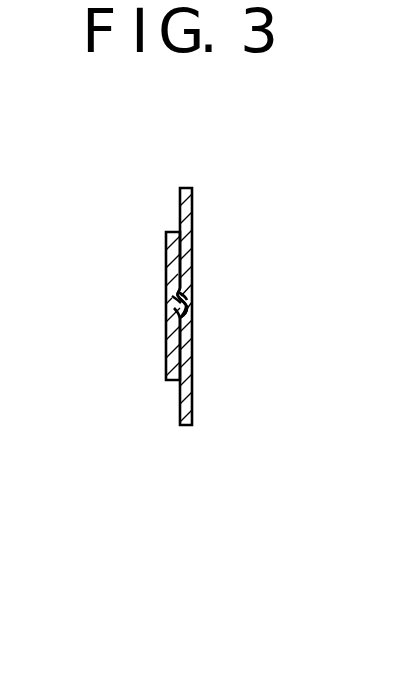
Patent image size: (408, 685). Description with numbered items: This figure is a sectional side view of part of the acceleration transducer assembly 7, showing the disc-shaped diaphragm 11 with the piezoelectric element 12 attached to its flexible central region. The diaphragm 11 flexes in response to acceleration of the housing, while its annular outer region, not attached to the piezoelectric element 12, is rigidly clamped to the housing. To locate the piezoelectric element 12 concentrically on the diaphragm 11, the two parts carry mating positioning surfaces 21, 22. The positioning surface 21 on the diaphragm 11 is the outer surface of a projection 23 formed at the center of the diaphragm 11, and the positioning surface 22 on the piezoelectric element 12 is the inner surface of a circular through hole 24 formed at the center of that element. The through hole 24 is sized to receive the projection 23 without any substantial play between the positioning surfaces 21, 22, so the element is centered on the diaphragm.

The acceleration transducer assembly 7 is at (182, 299).
The diaphragm 11 is at (187, 390).
The piezoelectric element 12 is at (168, 252).
The positioning surface 21 is at (184, 286).
The positioning surface 22 is at (174, 298).
The projection 23 is at (187, 306).
The through hole 24 is at (172, 311).